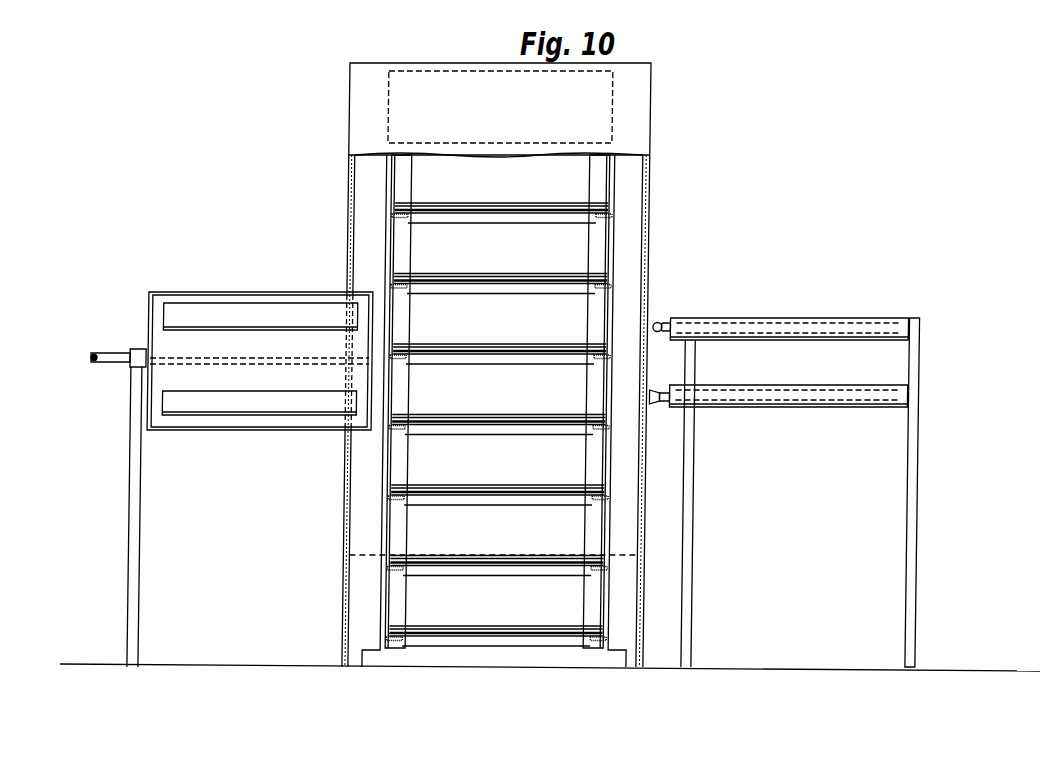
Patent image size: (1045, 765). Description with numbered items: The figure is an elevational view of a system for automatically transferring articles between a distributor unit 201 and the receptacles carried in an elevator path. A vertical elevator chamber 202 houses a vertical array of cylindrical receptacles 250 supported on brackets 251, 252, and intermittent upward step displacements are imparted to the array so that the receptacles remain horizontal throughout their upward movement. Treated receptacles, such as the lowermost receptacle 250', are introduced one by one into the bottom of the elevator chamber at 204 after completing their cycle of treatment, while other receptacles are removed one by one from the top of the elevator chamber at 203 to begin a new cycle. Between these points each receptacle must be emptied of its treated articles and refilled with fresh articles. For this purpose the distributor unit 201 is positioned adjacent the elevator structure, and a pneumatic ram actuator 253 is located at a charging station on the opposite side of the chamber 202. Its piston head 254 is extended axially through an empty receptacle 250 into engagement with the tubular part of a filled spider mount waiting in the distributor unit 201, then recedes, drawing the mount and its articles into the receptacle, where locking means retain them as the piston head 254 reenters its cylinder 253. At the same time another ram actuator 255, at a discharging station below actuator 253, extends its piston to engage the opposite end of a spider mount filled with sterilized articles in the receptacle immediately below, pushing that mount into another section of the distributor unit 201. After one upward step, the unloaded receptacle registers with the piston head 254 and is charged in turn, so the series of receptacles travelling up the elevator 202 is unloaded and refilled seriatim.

The distributor unit 201 is at (198, 297).
The vertical elevator chamber 202 is at (375, 535).
The top of the elevator chamber 203 is at (428, 93).
The bottom of the elevator chamber 204 is at (165, 607).
The cylindrical receptacle 250 is at (446, 389).
The cylindrical receptacle 250' is at (496, 647).
The bracket 251 is at (611, 280).
The bracket 252 is at (394, 285).
The pneumatic ram actuator 253 is at (794, 322).
The piston head 254 is at (661, 322).
The ram actuator 255 is at (798, 403).